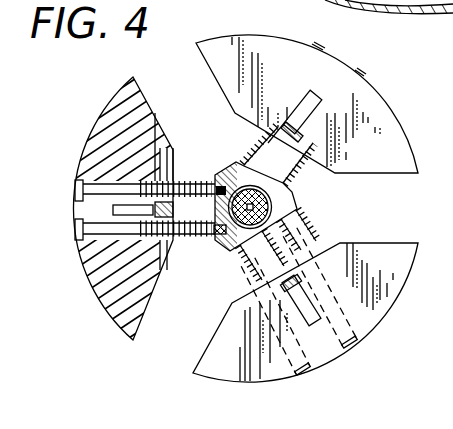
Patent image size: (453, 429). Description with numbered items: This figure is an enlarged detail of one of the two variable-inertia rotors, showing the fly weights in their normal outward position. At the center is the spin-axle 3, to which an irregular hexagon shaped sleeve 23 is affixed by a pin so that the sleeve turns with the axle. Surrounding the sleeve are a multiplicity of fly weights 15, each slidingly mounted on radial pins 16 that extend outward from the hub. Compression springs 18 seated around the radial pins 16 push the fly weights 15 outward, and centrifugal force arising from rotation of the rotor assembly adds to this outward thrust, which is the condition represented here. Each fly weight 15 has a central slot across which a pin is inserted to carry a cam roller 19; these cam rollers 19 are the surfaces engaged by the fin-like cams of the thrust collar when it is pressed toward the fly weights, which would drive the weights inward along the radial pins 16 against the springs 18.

The spin-axle 3 is at (293, 197).
The fly weights 15 is at (380, 137).
The radial pins 16 is at (103, 178).
The compression springs 18 is at (290, 238).
The cam rollers 19 is at (186, 178).
The irregular hexagon shaped sleeve 23 is at (296, 207).